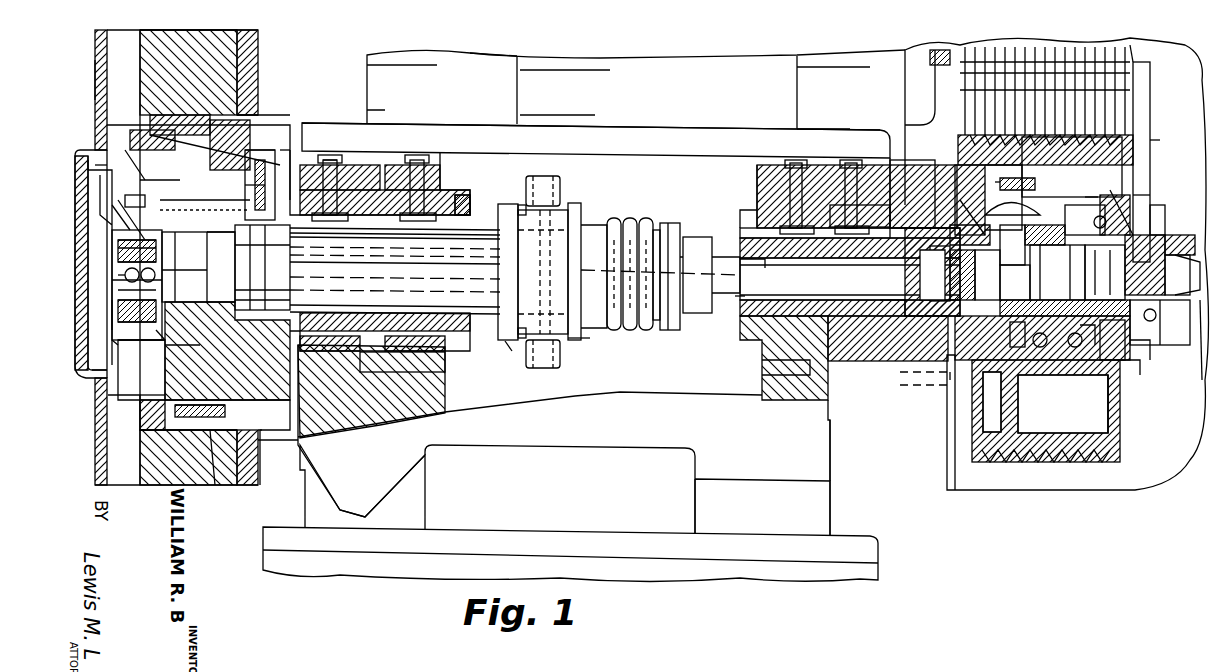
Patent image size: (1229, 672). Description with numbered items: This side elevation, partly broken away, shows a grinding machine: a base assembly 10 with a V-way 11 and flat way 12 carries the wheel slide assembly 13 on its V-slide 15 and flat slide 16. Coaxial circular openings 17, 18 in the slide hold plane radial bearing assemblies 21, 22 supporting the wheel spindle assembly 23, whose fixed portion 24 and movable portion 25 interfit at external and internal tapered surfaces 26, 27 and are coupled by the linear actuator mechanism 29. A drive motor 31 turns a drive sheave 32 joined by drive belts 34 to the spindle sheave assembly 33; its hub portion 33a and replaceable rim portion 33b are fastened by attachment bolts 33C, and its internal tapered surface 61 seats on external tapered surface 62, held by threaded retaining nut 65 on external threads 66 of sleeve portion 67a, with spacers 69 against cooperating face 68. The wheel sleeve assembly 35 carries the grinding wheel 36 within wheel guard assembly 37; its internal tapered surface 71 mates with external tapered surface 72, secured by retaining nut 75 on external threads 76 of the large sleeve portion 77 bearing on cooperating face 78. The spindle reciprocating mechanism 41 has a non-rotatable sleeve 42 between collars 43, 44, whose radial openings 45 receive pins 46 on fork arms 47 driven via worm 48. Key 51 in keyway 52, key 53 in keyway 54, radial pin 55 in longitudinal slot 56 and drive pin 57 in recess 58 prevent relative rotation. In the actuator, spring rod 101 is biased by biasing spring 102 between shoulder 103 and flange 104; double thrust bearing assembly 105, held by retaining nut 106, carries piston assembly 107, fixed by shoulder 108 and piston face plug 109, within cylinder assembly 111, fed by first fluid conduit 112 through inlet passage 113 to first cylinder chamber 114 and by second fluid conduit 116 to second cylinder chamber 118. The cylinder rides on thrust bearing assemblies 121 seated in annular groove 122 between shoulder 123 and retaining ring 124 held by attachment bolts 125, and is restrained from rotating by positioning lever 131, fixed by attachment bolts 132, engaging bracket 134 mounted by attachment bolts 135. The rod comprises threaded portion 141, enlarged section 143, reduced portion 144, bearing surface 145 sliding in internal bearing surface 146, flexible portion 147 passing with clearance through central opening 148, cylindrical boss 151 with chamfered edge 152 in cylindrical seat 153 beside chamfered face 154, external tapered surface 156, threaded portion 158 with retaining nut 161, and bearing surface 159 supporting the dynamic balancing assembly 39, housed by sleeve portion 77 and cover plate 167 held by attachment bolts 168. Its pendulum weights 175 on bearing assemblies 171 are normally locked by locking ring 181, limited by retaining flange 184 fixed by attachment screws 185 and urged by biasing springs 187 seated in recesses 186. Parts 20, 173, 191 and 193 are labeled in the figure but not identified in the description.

The base assembly 10 is at (858, 553).
The V-way 11 is at (400, 478).
The flat way 12 is at (812, 492).
The wheel slide assembly 13 is at (618, 430).
The V-slide 15 is at (305, 460).
The flat slide 16 is at (700, 485).
The circular opening 17 is at (360, 123).
The circular opening 18 is at (805, 165).
The housing 20 is at (290, 160).
The plane radial bearing assembly 21 is at (455, 200).
The plane radial bearing assembly 22 is at (755, 205).
The wheel spindle assembly 23 is at (692, 332).
The first longitudinally relatively fixed portion 24 is at (700, 237).
The second portion relatively movable longitudinally 25 is at (218, 485).
The external tapered surface 26 is at (165, 360).
The internal tapered surface 27 is at (215, 290).
The linear actuator mechanism 29 is at (1138, 355).
The drive motor 31 is at (497, 70).
The drive sheave 32 is at (1140, 48).
The spindle sheave assembly 33 is at (1118, 440).
The hub portion 33a is at (925, 372).
The replaceable rim portion 33b is at (1060, 360).
The attachment bolts 33C is at (1036, 182).
The drive belts 34 is at (1120, 92).
The wheel sleeve assembly 35 is at (245, 125).
The grinding wheel 36 is at (205, 50).
The wheel guard assembly 37 is at (105, 80).
The automatic dynamic balancing assembly 39 is at (112, 215).
The spindle reciprocating mechanism 41 is at (583, 205).
The non-rotatable sleeve 42 is at (533, 272).
The collar 43 is at (510, 342).
The collar 44 is at (585, 342).
The radial openings 45 is at (565, 200).
The pins 46 is at (548, 175).
The arms 47 is at (565, 185).
The worm 48 is at (635, 225).
The key 51 is at (950, 225).
The keyway 52 is at (975, 210).
The key 53 is at (178, 285).
The keyway 54 is at (137, 300).
The radially extending pin 55 is at (905, 270).
The longitudinal slot 56 is at (940, 262).
The drive pin 57 is at (262, 430).
The recess 58 is at (258, 445).
The internal tapered surface 61 is at (987, 275).
The external tapered surface 62 is at (989, 402).
The threaded retaining nut 65 is at (1019, 236).
The external threads 66 is at (1023, 335).
The sleeve portion 67a is at (1016, 282).
The cooperating face 68 is at (1063, 404).
The spacers or washers 69 is at (1040, 215).
The internal tapered surface 71 is at (175, 405).
The external tapered surface 72 is at (160, 415).
The retaining nut 75 is at (150, 185).
The external threads 76 is at (135, 205).
The relatively large sleeve portion 77 is at (100, 165).
The cooperating face 78 is at (150, 395).
The spring rod 101 is at (762, 345).
The biasing spring 102 is at (964, 275).
The shoulder 103 is at (920, 225).
The flange 104 is at (1057, 272).
The double thrust anti-friction bearing assembly 105 is at (1120, 360).
The retaining nut 106 is at (1145, 330).
The piston assembly 107 is at (1125, 205).
The shoulder 108 is at (1090, 215).
The threaded piston face plug 109 is at (1172, 250).
The cylinder assembly 111 is at (1085, 360).
The first fluid conduit 112 is at (1150, 215).
The fluid inlet passage 113 is at (1090, 200).
The first cylinder chamber 114 is at (1192, 275).
The second fluid conduit 116 is at (1160, 345).
The second cylinder chamber 118 is at (1140, 375).
The thrust bearing assembly 121 is at (1110, 420).
The annular groove 122 is at (1053, 242).
The shoulder 123 is at (1040, 360).
The retaining ring 124 is at (1135, 200).
The attachment bolts 125 is at (1152, 140).
The cylinder assembly positioning lever 131 is at (1150, 68).
The attachment bolts 132 is at (1205, 380).
The bracket 134 is at (960, 85).
The attachment bolts 135 is at (930, 62).
The relatively reduced threaded portion 141 is at (1105, 272).
The relatively enlarged section 143 is at (1045, 226).
The relatively reduced portion 144 is at (1030, 185).
The enlarged elongated bearing surface 145 is at (850, 281).
The internal bearing surface 146 is at (850, 270).
The elongated flexible portion 147 is at (735, 300).
The central opening 148 is at (722, 257).
The cylindrical boss 151 is at (345, 263).
The chamfered edge 152 is at (345, 252).
The cylindrical seat 153 is at (345, 236).
The chamfered face 154 is at (235, 232).
The external tapered surface 156 is at (205, 205).
The threaded portion 158 is at (125, 288).
The elongated bearing surface 159 is at (120, 262).
The retaining nut 161 is at (118, 240).
The cover plate 167 is at (160, 325).
The attachment bolts 168 is at (112, 340).
The bearing assemblies 171 is at (120, 248).
The ring 173 is at (120, 275).
The pendulum weights 175 is at (112, 312).
The locking ring 181 is at (140, 340).
The retaining flange 184 is at (118, 328).
The attachment screws 185 is at (100, 380).
The recesses 186 is at (160, 200).
The biasing springs 187 is at (250, 185).
The bolt 191 is at (348, 160).
The ring 193 is at (260, 141).